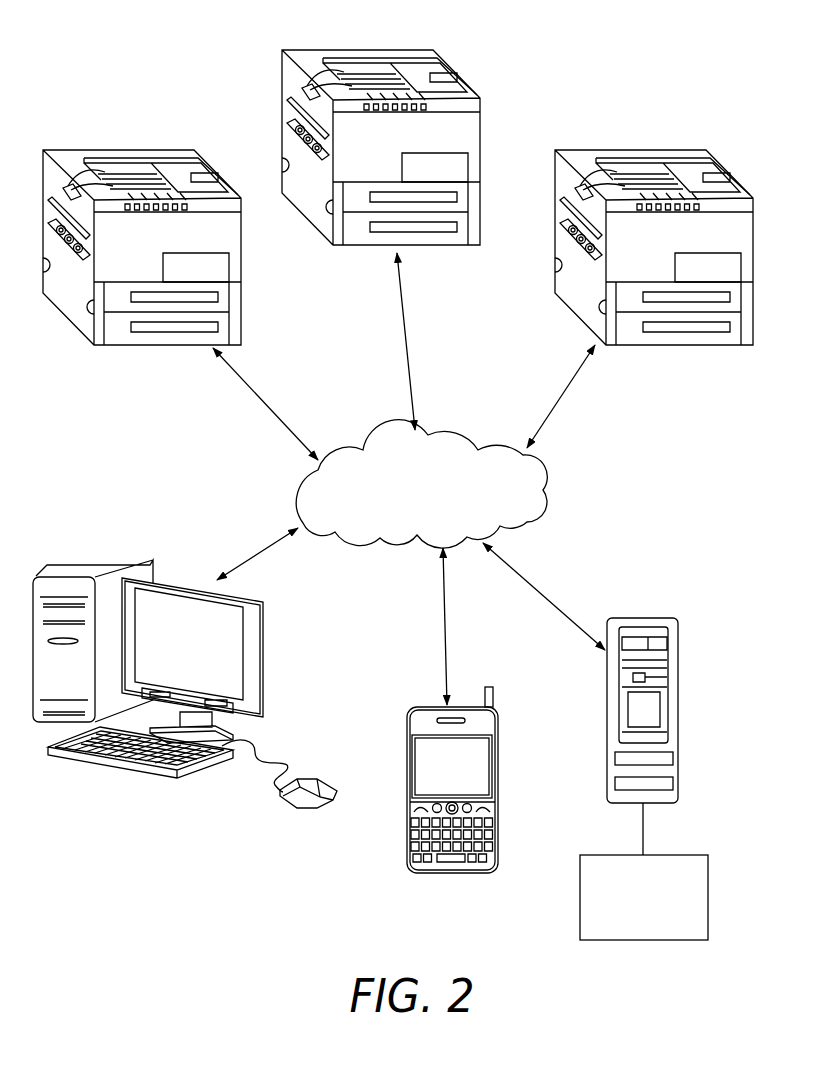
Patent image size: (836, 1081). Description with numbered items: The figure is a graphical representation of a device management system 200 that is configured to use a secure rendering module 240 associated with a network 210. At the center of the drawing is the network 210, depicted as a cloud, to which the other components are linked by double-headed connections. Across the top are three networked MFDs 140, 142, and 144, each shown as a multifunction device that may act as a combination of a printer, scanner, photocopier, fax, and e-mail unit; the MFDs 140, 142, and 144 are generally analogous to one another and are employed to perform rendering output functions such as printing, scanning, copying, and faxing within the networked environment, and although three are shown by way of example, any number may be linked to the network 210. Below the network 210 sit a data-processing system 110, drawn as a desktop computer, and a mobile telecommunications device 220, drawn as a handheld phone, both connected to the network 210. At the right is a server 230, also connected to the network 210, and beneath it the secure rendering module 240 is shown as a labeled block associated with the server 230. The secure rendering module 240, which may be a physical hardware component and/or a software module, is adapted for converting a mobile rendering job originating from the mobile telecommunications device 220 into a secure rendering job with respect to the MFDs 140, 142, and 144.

The data-processing system 110 is at (117, 552).
The MFD 140 is at (404, 50).
The MFD 142 is at (165, 150).
The MFD 144 is at (677, 150).
The device management system 200 is at (577, 76).
The network 210 is at (450, 433).
The mobile telecommunications device 220 is at (498, 770).
The server 230 is at (680, 712).
The secure rendering module 240 is at (580, 898).